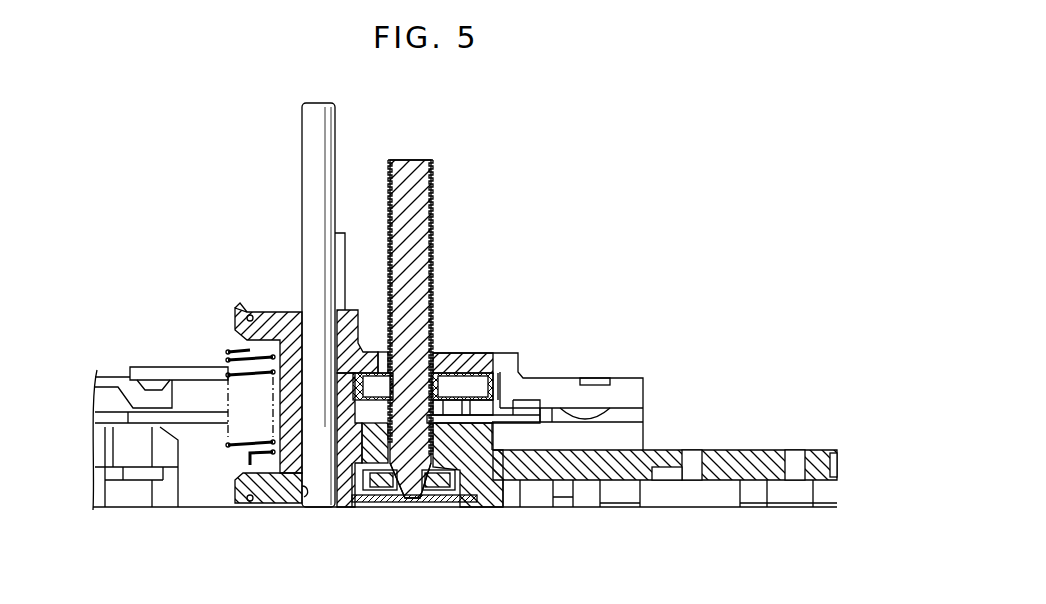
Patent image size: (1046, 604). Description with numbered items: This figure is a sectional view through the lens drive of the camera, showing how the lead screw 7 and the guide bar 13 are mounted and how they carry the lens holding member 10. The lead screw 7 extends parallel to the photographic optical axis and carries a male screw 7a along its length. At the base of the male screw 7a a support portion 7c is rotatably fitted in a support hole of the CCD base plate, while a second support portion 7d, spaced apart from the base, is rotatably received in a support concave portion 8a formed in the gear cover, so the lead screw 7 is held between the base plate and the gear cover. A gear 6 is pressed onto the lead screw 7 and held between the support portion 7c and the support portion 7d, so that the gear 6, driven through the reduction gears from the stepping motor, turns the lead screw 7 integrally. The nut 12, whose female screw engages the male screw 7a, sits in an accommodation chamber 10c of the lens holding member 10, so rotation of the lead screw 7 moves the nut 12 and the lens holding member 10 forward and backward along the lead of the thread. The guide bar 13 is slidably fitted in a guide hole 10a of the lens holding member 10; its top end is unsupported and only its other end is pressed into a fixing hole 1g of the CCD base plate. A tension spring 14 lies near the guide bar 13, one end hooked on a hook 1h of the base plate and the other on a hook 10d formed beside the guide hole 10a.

The guide bar 13 is at (307, 147).
The lead screw 7 is at (410, 165).
The male screw 7a is at (435, 190).
The support portion 7c is at (462, 507).
The support portion 7d is at (408, 503).
The lens holding member 10 is at (508, 360).
The guide hole 10a is at (300, 347).
The accommodation chamber 10c is at (355, 500).
The hook 10d is at (235, 322).
The nut 12 is at (453, 380).
The tension spring 14 is at (235, 354).
The fixing hole 1g is at (303, 485).
The hook 1h is at (238, 492).
The gear 6 is at (418, 505).
The support concave portion 8a is at (410, 490).